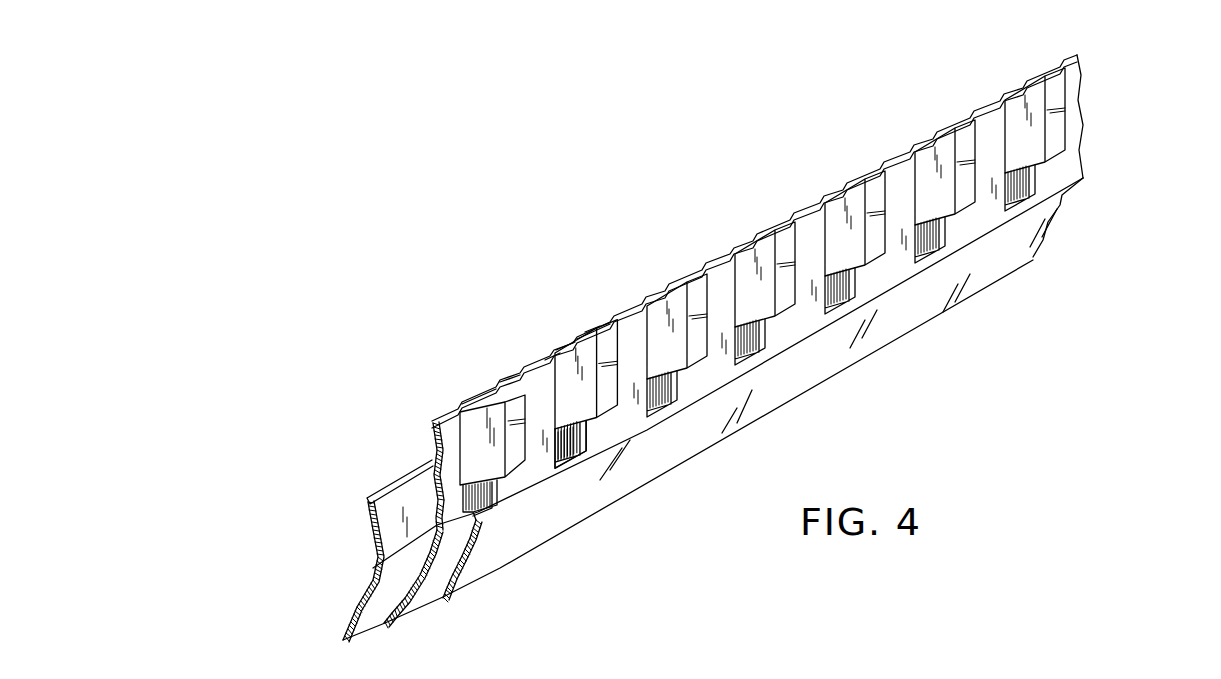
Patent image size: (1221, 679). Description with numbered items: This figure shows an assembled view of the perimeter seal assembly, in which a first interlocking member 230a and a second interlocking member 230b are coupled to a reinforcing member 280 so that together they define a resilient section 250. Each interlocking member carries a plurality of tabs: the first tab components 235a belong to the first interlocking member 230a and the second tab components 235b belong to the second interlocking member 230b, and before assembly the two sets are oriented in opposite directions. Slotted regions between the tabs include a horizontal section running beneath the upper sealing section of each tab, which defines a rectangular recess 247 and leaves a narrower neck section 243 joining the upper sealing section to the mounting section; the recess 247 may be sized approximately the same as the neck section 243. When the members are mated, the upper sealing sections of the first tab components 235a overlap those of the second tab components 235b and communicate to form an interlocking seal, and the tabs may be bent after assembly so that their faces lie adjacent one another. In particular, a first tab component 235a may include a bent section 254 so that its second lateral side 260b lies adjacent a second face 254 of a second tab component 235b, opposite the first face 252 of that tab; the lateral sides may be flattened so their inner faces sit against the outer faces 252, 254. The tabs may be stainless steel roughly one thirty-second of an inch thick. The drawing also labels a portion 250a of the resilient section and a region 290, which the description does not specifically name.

The resilient section 250 is at (678, 256).
The top surface 250a is at (520, 378).
The first face 252 is at (466, 396).
The bent section 254 is at (475, 397).
The first tab components 235a is at (553, 356).
The second tab components 235b is at (592, 327).
The second lateral side 260b is at (567, 343).
The cut-off portion 290 is at (430, 534).
The reinforcing member 280 is at (350, 615).
The first interlocking member 230a is at (418, 593).
The second interlocking member 230b is at (468, 572).
The neck section 243 is at (574, 448).
The rectangular recess 247 is at (565, 455).